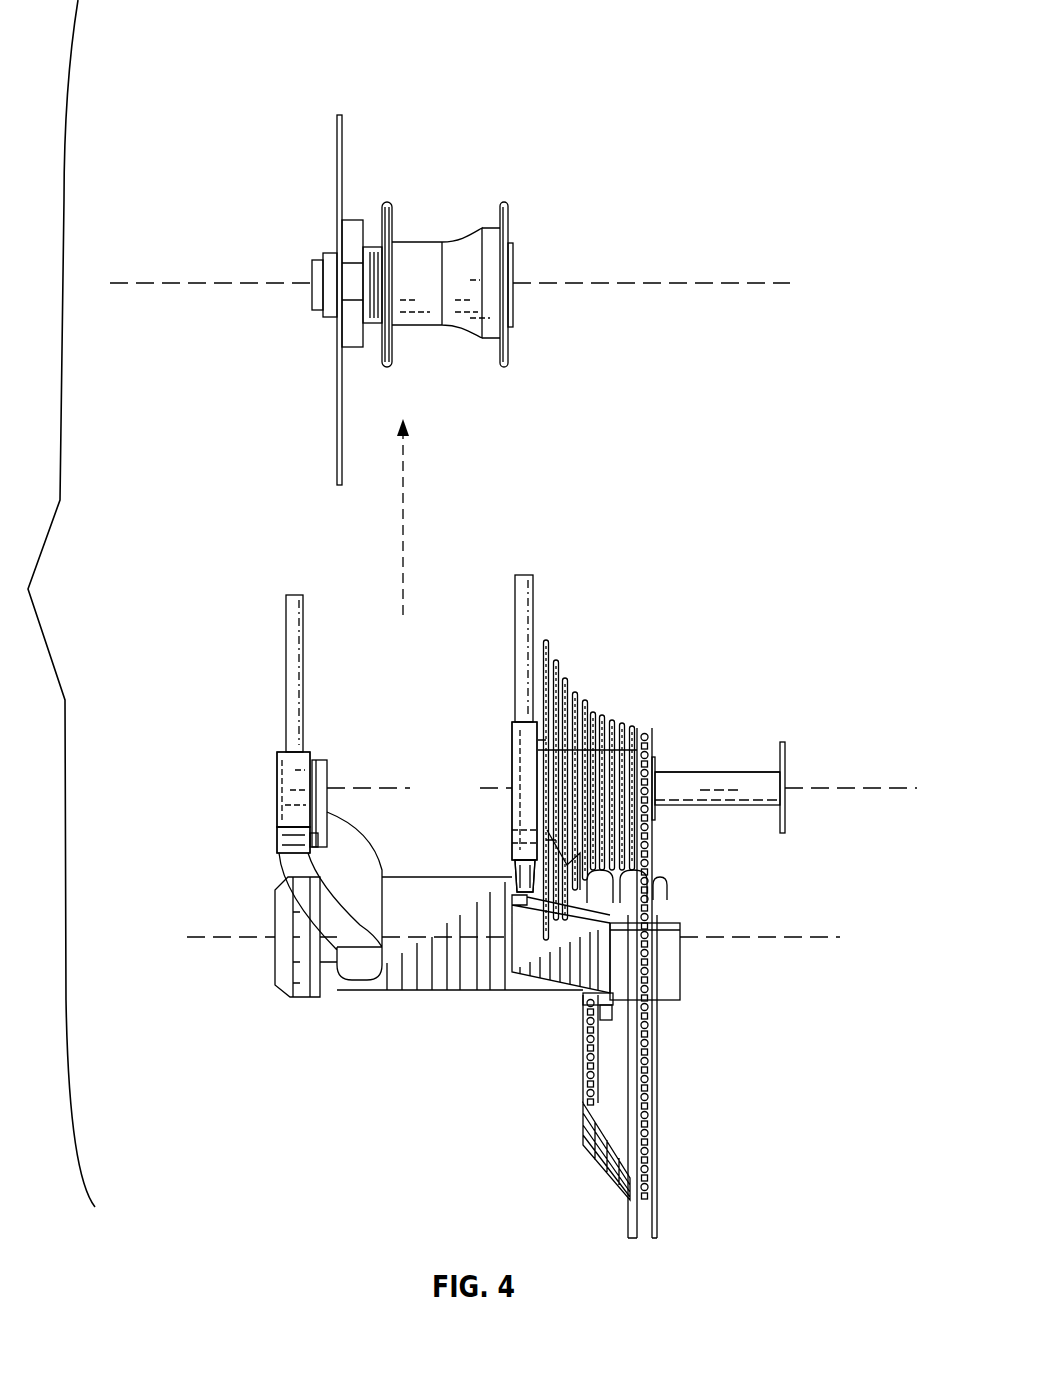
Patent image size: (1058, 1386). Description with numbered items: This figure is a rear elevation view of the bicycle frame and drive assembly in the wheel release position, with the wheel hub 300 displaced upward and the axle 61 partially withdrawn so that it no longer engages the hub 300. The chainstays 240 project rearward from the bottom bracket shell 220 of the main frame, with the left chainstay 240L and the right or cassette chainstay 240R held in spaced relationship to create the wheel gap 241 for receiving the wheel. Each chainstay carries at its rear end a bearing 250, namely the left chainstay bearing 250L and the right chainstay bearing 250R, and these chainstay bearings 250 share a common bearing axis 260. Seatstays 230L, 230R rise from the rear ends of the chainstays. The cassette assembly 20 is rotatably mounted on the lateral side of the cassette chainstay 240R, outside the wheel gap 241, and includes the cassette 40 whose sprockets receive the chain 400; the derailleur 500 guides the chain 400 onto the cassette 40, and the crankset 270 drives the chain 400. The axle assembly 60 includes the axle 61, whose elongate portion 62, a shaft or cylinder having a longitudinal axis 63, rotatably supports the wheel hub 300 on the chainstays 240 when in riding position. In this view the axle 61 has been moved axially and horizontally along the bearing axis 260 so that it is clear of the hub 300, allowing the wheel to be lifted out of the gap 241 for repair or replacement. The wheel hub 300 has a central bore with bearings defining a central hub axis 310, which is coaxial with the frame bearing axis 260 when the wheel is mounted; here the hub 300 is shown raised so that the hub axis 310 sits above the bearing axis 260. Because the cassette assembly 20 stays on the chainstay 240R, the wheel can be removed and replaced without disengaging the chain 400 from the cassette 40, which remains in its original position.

The cassette assembly 20 is at (602, 776).
The cassette 40 is at (590, 686).
The axle assembly 60 is at (749, 731).
The axle 61 is at (693, 764).
The elongate portion 62 is at (738, 772).
The longitudinal axis 63 is at (807, 787).
The bottom bracket shell 220 is at (420, 892).
The left fork leg 230L is at (285, 623).
The right fork leg 230R is at (532, 597).
The chainstays 240 is at (285, 762).
The left chainstay 240L is at (285, 780).
The right chainstay 240R is at (518, 753).
The wheel gap 241 is at (347, 671).
The chainstay bearings 250 is at (278, 807).
The left chainstay bearing 250L is at (277, 817).
The right chainstay bearing 250R is at (512, 813).
The bearing axis 260 is at (357, 783).
The crankset 270 is at (278, 1006).
The wheel hub 300 is at (445, 151).
The central hub axis 310 is at (634, 284).
The chain 400 is at (583, 1075).
The derailleur 500 is at (700, 961).